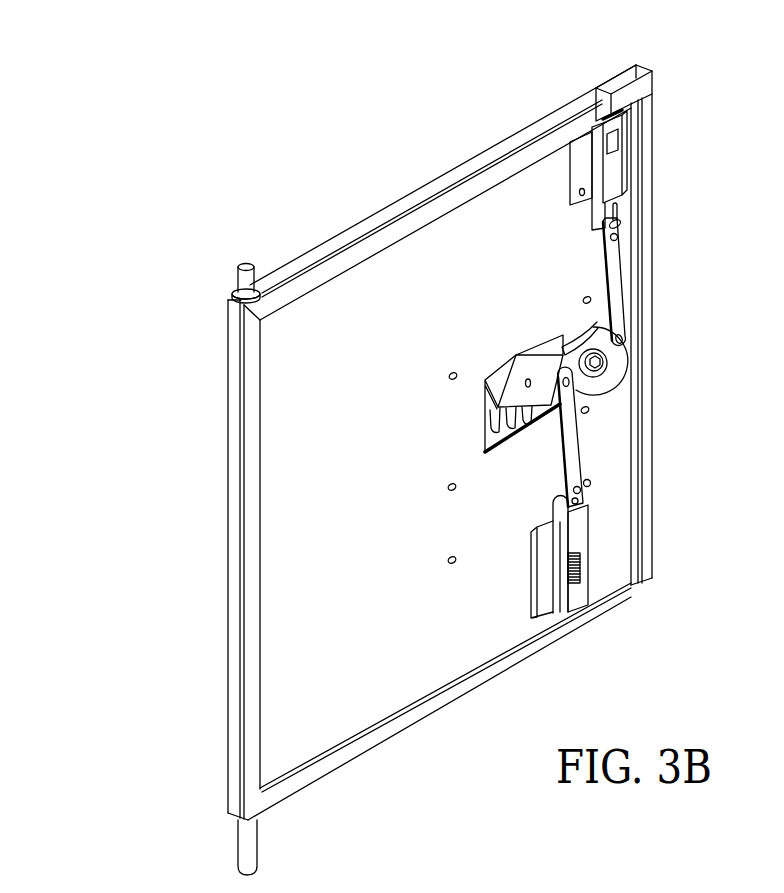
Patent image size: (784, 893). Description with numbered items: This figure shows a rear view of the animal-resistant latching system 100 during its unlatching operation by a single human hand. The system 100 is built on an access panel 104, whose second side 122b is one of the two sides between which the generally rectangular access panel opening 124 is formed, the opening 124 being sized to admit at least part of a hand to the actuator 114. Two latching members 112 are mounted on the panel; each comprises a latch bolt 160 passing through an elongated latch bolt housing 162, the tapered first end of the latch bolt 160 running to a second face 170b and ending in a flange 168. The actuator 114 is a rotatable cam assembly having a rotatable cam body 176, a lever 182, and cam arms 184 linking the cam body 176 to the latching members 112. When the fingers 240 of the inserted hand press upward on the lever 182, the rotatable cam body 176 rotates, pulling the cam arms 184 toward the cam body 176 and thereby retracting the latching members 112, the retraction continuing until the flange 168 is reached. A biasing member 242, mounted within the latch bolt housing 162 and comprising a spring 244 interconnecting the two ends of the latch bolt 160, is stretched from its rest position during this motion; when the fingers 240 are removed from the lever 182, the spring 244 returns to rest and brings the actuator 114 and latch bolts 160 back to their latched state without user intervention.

The animal-resistant latching system 100 is at (190, 478).
The access panel 104 is at (362, 700).
The latching member 112 is at (616, 168).
The actuator 114 is at (603, 382).
The second side of the access panel 122b is at (387, 282).
The access panel opening 124 is at (548, 410).
The latch bolt 160 is at (608, 95).
The latch bolt housing 162 is at (610, 155).
The flange 168 is at (632, 96).
The second face of the latching member 170b is at (616, 113).
The rotatable cam body 176 is at (622, 358).
The lever 182 is at (494, 388).
The cam arm 184 is at (617, 276).
The fingers 240 is at (493, 430).
The biasing member 242 is at (616, 141).
The spring 244 is at (580, 570).